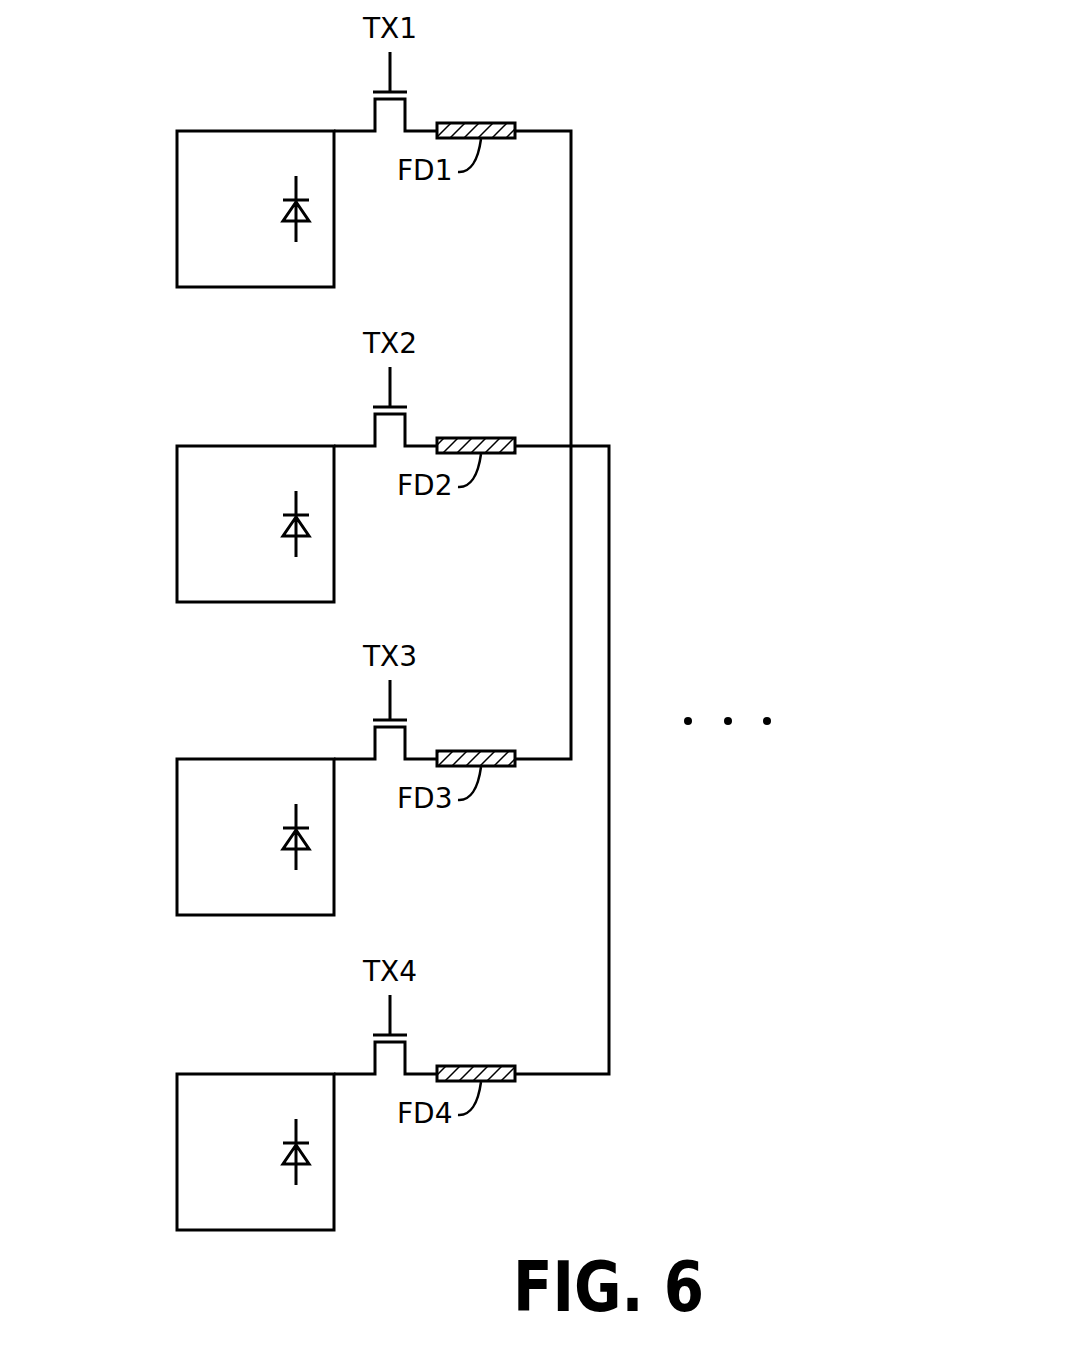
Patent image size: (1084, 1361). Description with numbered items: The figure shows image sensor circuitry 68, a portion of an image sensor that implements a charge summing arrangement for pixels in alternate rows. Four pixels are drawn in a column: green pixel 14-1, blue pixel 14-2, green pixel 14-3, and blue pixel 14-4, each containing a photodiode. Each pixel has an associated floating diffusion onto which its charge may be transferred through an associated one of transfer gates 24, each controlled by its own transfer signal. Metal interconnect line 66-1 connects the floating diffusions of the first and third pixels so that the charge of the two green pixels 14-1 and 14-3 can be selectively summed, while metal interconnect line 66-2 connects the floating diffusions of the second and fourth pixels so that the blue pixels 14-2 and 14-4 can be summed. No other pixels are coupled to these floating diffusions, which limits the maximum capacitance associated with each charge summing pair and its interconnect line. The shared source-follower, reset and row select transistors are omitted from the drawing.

The green pixel 14-1 is at (187, 187).
The blue pixel 14-2 is at (187, 502).
The green pixel 14-3 is at (187, 815).
The blue pixel 14-4 is at (187, 1130).
The transfer gates 24 is at (383, 116).
The metal interconnect line 66-1 is at (572, 223).
The metal interconnect line 66-2 is at (610, 538).
The image sensor circuitry 68 is at (664, 75).